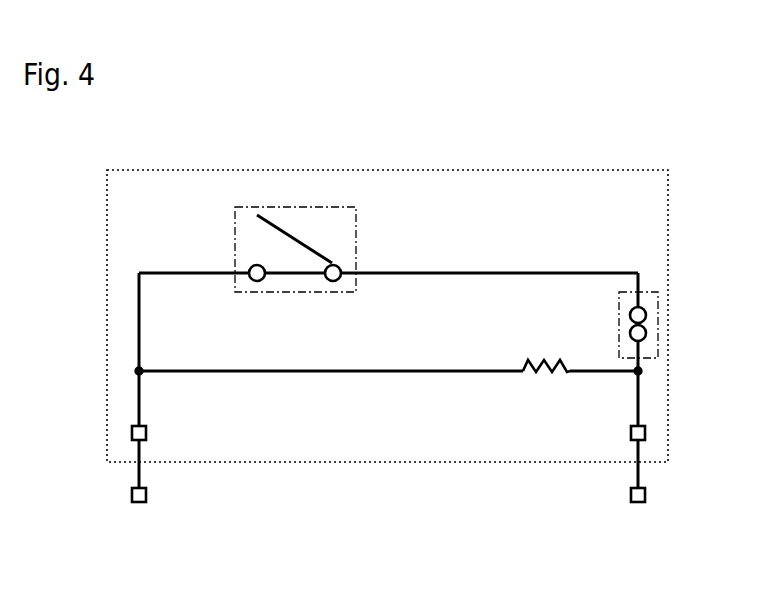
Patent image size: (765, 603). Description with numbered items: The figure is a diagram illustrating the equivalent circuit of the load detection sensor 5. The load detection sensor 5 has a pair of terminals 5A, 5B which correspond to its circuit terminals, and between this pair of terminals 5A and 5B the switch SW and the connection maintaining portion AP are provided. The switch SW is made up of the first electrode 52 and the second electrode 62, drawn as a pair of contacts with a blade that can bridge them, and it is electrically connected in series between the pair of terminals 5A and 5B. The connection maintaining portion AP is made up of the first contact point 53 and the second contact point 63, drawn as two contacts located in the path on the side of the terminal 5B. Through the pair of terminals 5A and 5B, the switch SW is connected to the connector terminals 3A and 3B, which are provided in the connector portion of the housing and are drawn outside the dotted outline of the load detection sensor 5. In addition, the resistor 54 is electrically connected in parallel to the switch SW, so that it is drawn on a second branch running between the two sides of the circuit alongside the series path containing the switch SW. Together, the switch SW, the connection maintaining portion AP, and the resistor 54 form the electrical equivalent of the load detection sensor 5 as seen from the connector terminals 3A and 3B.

The load detection sensor 5 is at (127, 169).
The switch SW is at (356, 245).
The first electrode 52 is at (258, 282).
The second electrode 62 is at (333, 282).
The connection maintaining portion AP is at (652, 290).
The second contact point 63 is at (648, 315).
The first contact point 53 is at (648, 333).
The resistor 54 is at (551, 357).
The terminal 5A is at (131, 433).
The terminal 5B is at (646, 434).
The connector terminal 3A is at (138, 503).
The connector terminal 3B is at (640, 503).